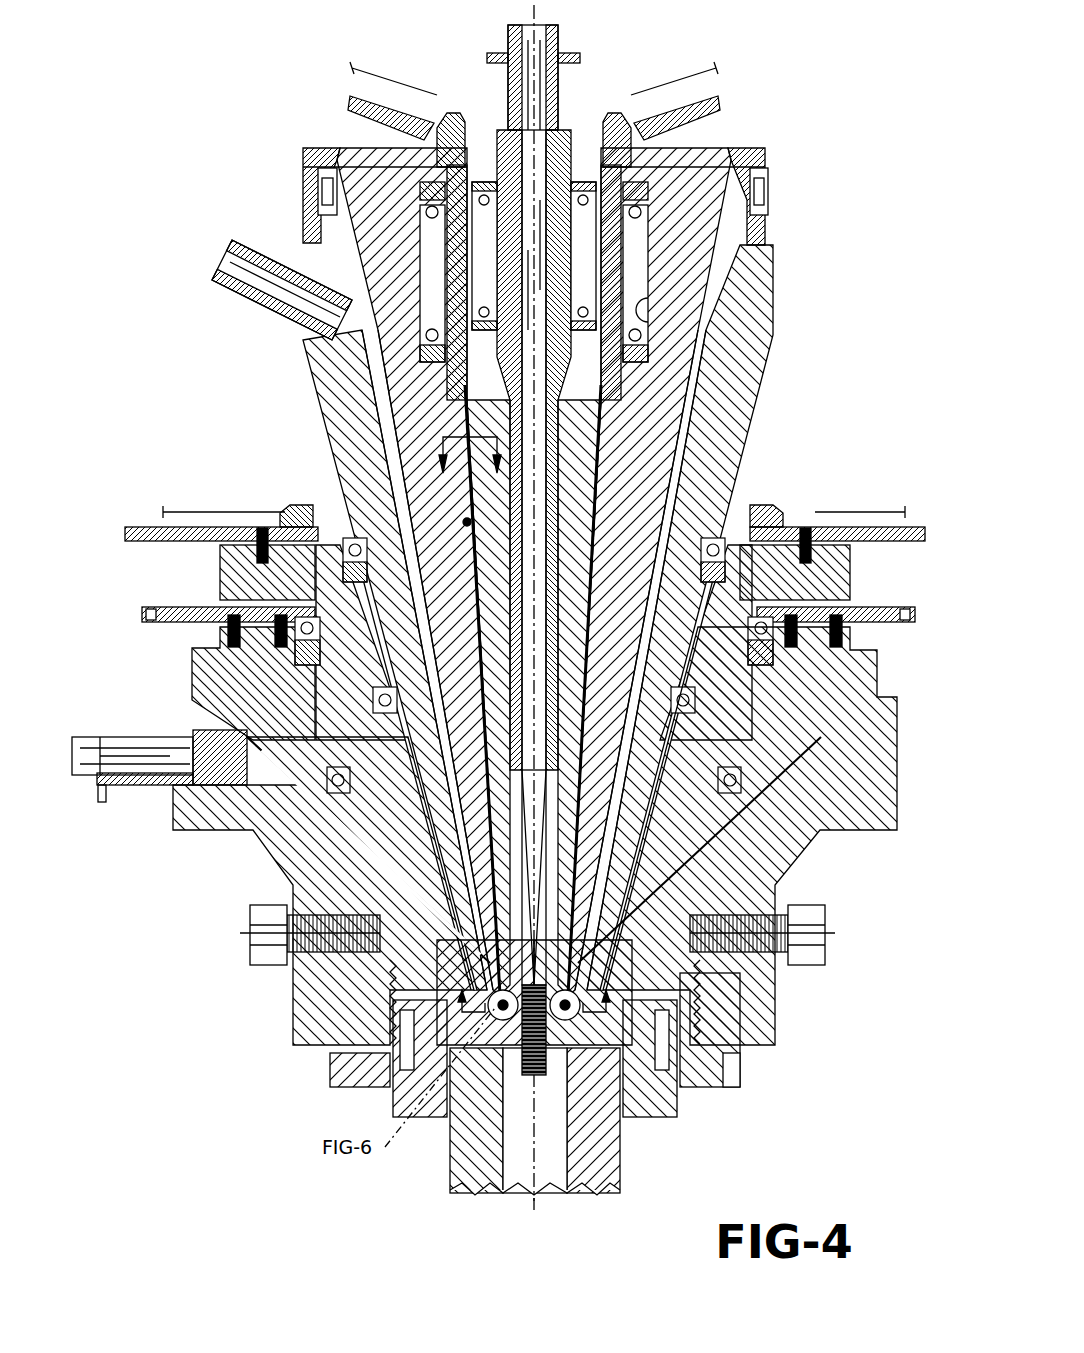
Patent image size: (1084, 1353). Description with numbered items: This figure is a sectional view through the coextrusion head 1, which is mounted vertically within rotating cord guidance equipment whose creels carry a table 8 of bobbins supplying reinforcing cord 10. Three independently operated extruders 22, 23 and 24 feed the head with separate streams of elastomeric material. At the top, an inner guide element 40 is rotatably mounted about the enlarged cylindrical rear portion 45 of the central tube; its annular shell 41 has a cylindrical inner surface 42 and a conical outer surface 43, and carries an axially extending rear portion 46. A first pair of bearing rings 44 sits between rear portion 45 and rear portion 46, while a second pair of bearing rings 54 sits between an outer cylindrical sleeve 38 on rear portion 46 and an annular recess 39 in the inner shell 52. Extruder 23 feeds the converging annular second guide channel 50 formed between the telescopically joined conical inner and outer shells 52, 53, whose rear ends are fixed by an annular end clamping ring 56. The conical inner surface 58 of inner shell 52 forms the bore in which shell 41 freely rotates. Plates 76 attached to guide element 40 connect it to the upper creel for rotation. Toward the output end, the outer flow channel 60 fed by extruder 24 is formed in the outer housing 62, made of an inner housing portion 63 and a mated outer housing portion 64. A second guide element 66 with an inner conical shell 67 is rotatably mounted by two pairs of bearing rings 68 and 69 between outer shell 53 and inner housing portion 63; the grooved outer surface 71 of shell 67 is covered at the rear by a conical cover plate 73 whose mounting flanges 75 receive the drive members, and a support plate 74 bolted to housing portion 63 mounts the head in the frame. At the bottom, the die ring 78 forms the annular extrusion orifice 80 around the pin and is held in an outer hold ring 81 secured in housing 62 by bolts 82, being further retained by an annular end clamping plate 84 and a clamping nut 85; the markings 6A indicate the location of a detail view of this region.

The coextrusion head 1 is at (298, 447).
The table 8 is at (470, 468).
The reinforcing cord 10 is at (388, 88).
The extruder 22 is at (577, 72).
The extruder 23 is at (282, 247).
The extruder 24 is at (143, 790).
The outer cylindrical sleeve 38 is at (622, 246).
The annular recess 39 is at (645, 312).
The inner guide element 40 is at (458, 160).
The annular shell 41 is at (605, 421).
The cylindrical inner surface 42 is at (570, 470).
The conical outer surface 43 is at (603, 442).
The first pair of bearing rings 44 is at (580, 170).
The enlarged cylindrical rear portion 45 is at (506, 156).
The rear portion of annular shell 46 is at (654, 274).
The second elastomeric material guide channel 50 is at (373, 371).
The inner shell 52 is at (418, 431).
The outer shell 53 is at (343, 409).
The second pair of bearing rings 54 is at (634, 213).
The annular end clamping ring 56 is at (315, 160).
The conical inner surface 58 is at (463, 521).
The outer elastomeric material flow channel 60 is at (312, 816).
The outer housing 62 is at (188, 676).
The inner housing portion 63 is at (208, 665).
The outer housing portion 64 is at (307, 855).
The second guide element 66 is at (228, 575).
The inner conical shell 67 is at (420, 830).
The bearing rings 68 is at (810, 828).
The bearing rings 69 is at (732, 735).
The outer surface 71 is at (722, 680).
The cover plate 73 is at (730, 703).
The support plate 74 is at (873, 622).
The mounting flanges 75 is at (130, 527).
The plates 76 is at (365, 97).
The die ring 78 is at (590, 1037).
The annular extrusion orifice 80 is at (580, 1055).
The outer hold ring 81 is at (665, 962).
The bolts 82 is at (805, 968).
The annular end clamping plate 84 is at (652, 1075).
The clamping nut 85 is at (728, 1078).
The section 6A is at (536, 995).